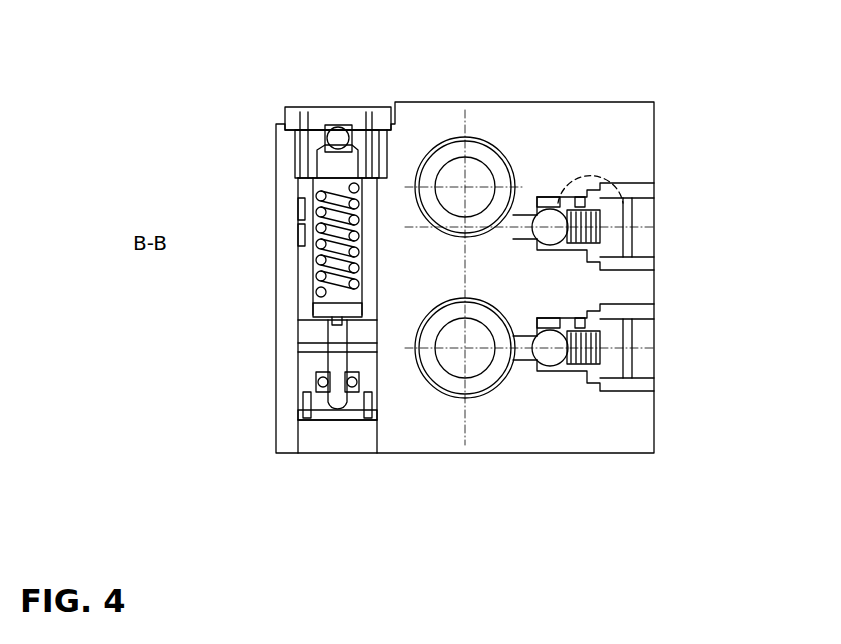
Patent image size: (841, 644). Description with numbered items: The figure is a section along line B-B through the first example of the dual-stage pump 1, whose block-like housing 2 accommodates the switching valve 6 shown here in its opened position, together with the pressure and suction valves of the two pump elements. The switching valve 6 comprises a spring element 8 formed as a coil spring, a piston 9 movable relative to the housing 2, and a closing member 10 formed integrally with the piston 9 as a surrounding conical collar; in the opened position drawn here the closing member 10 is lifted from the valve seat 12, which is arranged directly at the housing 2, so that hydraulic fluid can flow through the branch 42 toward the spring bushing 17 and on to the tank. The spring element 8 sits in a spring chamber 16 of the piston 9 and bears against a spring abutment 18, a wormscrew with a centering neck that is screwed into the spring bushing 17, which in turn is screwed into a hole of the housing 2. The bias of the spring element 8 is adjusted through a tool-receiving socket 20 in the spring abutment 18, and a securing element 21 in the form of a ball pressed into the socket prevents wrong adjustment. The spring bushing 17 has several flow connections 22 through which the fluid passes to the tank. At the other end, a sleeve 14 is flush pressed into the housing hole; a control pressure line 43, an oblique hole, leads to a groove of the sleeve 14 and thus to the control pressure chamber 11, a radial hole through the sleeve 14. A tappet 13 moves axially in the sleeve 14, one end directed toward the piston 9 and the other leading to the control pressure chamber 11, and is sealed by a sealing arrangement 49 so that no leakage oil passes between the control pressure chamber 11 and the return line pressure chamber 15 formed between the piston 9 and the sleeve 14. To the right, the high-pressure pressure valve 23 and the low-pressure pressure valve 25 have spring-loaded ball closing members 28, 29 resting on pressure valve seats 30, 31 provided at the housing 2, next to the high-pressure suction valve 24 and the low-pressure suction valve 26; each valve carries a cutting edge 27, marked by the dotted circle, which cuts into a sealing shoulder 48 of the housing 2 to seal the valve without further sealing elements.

The dual-stage pump 1 is at (168, 157).
The housing 2 is at (590, 118).
The switching valve 6 is at (283, 107).
The spring element 8 is at (313, 300).
The piston 9 is at (308, 328).
The closing member 10 is at (300, 186).
The control pressure chamber 11 is at (355, 413).
The valve seat 12 is at (298, 203).
The tappet 13 is at (307, 400).
The sleeve 14 is at (330, 433).
The return line pressure chamber 15 is at (307, 352).
The spring chamber 16 is at (312, 263).
The spring bushing 17 is at (290, 120).
The spring abutment 18 is at (372, 125).
The tool-receiving socket 20 is at (350, 128).
The securing element 21 is at (333, 130).
The flow connections 22 is at (298, 113).
The high-pressure pressure valve 23 is at (655, 318).
The high-pressure suction valve 24 is at (455, 387).
The low-pressure pressure valve 25 is at (655, 190).
The low-pressure suction valve 26 is at (462, 160).
The cutting edge 27 is at (587, 195).
The closing member 28 is at (552, 368).
The closing member 29 is at (553, 208).
The pressure valve seat 30 is at (547, 362).
The pressure valve seat 31 is at (537, 212).
The branch 42 is at (300, 232).
The control pressure line 43 is at (303, 418).
The sealing shoulder 48 is at (580, 323).
The sealing arrangement 49 is at (316, 380).